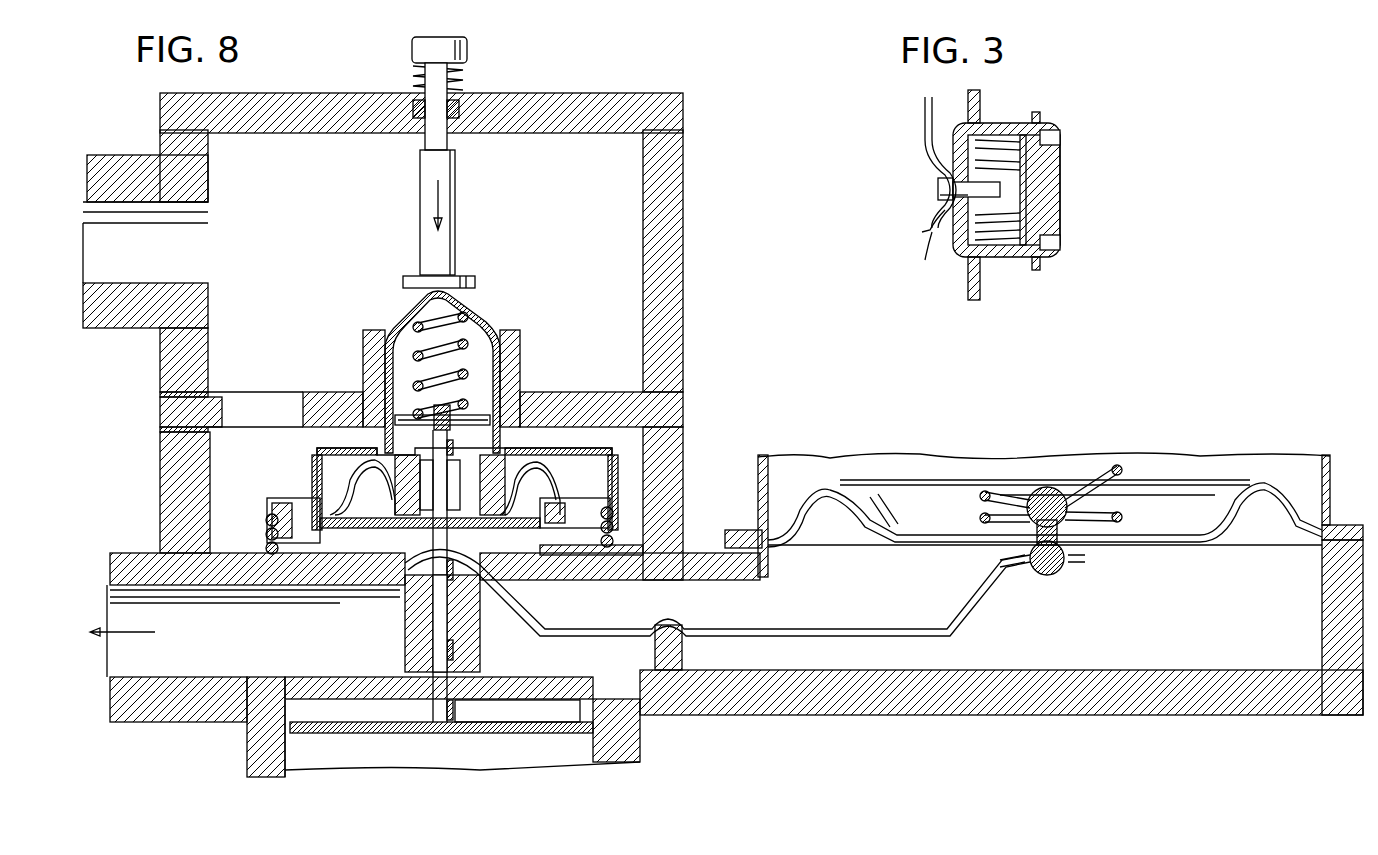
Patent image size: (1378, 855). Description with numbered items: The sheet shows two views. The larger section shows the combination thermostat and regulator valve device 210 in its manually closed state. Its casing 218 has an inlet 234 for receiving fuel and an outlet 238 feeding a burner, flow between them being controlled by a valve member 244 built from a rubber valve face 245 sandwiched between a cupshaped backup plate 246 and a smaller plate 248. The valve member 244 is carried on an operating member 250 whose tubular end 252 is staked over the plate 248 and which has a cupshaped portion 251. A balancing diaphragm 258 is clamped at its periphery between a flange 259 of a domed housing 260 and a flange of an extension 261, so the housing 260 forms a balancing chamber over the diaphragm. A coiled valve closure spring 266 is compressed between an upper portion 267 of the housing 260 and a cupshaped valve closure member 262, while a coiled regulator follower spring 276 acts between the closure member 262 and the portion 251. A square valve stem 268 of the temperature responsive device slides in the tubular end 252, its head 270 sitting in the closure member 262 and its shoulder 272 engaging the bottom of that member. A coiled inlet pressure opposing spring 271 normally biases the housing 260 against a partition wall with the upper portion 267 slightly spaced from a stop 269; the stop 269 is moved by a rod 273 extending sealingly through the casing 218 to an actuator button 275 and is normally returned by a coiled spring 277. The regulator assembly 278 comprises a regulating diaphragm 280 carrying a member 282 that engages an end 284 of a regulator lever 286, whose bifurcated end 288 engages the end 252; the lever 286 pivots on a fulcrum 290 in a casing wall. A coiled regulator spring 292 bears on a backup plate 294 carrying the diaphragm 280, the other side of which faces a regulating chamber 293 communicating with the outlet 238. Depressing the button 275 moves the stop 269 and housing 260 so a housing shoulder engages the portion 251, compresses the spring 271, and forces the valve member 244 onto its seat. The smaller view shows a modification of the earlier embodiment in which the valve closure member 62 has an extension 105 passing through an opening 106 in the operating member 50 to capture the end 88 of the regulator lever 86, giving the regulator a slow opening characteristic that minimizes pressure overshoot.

In FIG. 8, the combination thermostat and regulator valve device 210 is at (705, 282).
In FIG. 8, the casing 218 is at (575, 93).
In FIG. 8, the inlet 234 is at (160, 256).
In FIG. 8, the outlet 238 is at (222, 662).
In FIG. 8, the valve member 244 is at (615, 517).
In FIG. 8, the rubber valve face 245 is at (537, 555).
In FIG. 8, the cupshaped backup plate 246 is at (330, 475).
In FIG. 8, the plate 248 is at (395, 560).
In FIG. 8, the operating member 250 is at (500, 448).
In FIG. 8, the cupshaped portion 251 is at (445, 545).
In FIG. 8, the tubular end 252 is at (488, 585).
In FIG. 8, the balancing diaphragm 258 is at (322, 448).
In FIG. 8, the flange 259 is at (300, 480).
In FIG. 8, the domed housing 260 is at (398, 286).
In FIG. 8, the extension 261 is at (268, 520).
In FIG. 8, the cupshaped valve closure member 262 is at (470, 425).
In FIG. 8, the coiled valve closure spring 266 is at (393, 312).
In FIG. 8, the upper portion 267 is at (470, 305).
In FIG. 8, the valve stem 268 is at (430, 715).
In FIG. 8, the stop 269 is at (403, 280).
In FIG. 8, the head 270 is at (450, 412).
In FIG. 8, the coiled inlet pressure opposing spring 271 is at (612, 535).
In FIG. 8, the shoulder 272 is at (435, 430).
In FIG. 8, the rod 273 is at (455, 200).
In FIG. 8, the actuator button 275 is at (412, 50).
In FIG. 8, the coiled regulator follower spring 276 is at (530, 468).
In FIG. 8, the coiled spring 277 is at (463, 78).
In FIG. 8, the regulator assembly 278 is at (1225, 550).
In FIG. 8, the regulating diaphragm 280 is at (868, 535).
In FIG. 8, the member 282 is at (1060, 497).
In FIG. 8, the end 284 is at (1040, 575).
In FIG. 8, the regulator lever 286 is at (795, 637).
In FIG. 8, the bifurcated end 288 is at (430, 555).
In FIG. 8, the fulcrum 290 is at (658, 640).
In FIG. 8, the coiled regulator spring 292 is at (1125, 468).
In FIG. 8, the regulating chamber 293 is at (1212, 612).
In FIG. 8, the backup plate 294 is at (920, 510).
In FIG. 3, the operating member 50 is at (1000, 123).
In FIG. 3, the valve closure member 62 is at (1045, 192).
In FIG. 3, the regulator lever 86 is at (920, 118).
In FIG. 3, the end 88 is at (925, 245).
In FIG. 3, the extension 105 is at (938, 189).
In FIG. 3, the opening 106 is at (945, 200).